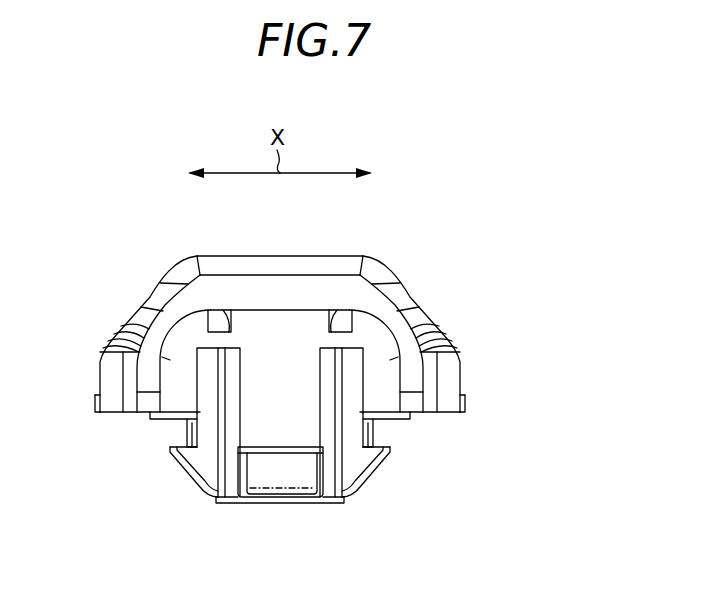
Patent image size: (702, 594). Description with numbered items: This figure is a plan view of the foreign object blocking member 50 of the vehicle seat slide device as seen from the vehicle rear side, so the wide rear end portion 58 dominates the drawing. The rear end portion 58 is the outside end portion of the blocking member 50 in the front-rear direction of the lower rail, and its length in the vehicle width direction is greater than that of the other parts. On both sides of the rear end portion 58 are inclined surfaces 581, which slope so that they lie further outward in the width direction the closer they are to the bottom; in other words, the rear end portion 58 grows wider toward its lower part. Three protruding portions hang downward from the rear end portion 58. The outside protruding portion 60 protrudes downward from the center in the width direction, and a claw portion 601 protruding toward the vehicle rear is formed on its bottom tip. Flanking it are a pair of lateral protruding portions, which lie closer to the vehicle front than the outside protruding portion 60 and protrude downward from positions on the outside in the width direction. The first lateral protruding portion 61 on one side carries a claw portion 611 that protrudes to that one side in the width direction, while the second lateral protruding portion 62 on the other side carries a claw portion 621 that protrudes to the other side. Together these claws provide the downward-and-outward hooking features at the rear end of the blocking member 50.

The foreign object blocking member 50 is at (124, 211).
The rear end portion 58 is at (288, 258).
The inclined surface 581 is at (135, 309).
The outside protruding portion 60 is at (292, 414).
The claw portion 601 is at (277, 478).
The first lateral protruding portion 61 is at (354, 404).
The claw portion 611 is at (368, 457).
The second lateral protruding portion 62 is at (206, 404).
The claw portion 621 is at (191, 456).